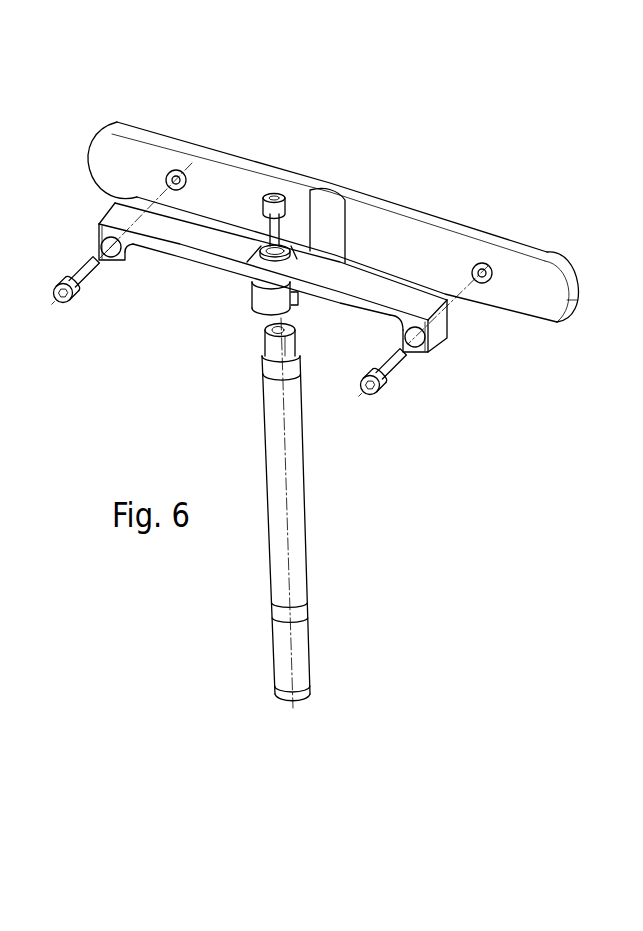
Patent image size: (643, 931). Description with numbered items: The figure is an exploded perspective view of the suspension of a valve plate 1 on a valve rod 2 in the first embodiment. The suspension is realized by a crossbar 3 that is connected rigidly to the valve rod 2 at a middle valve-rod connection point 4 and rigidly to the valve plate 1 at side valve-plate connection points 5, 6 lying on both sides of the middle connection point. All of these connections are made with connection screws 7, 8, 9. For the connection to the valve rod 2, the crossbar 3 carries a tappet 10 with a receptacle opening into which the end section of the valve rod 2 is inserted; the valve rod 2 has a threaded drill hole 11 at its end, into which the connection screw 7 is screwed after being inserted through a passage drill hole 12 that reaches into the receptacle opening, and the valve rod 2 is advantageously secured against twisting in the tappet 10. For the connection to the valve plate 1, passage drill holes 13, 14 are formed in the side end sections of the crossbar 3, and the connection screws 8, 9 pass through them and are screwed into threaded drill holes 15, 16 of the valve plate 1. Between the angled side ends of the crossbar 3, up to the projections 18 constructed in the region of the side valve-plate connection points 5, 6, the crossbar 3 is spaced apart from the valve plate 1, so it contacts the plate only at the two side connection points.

The valve plate 1 is at (582, 248).
The valve rod 2 is at (320, 516).
The crossbar 3 is at (492, 356).
The middle valve-rod connection point 4 is at (248, 320).
The side valve-plate connection point 5 is at (108, 275).
The side valve-plate connection point 6 is at (419, 368).
The connection screw 7 is at (283, 207).
The connection screw 8 is at (58, 288).
The connection screw 9 is at (373, 388).
The tappet 10 is at (255, 300).
The threaded drill hole 11 is at (267, 340).
The passage drill hole 12 is at (283, 249).
The passage drill hole 13 is at (103, 242).
The passage drill hole 14 is at (425, 347).
The threaded drill hole 15 is at (177, 173).
The threaded drill hole 16 is at (482, 265).
The projection 18 is at (452, 325).